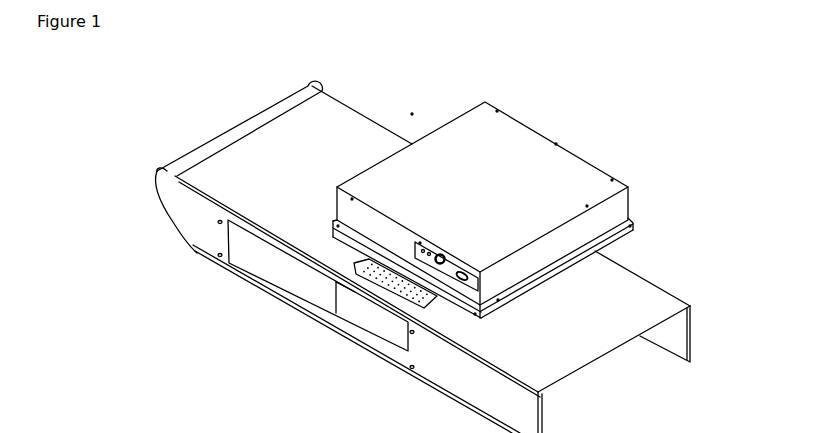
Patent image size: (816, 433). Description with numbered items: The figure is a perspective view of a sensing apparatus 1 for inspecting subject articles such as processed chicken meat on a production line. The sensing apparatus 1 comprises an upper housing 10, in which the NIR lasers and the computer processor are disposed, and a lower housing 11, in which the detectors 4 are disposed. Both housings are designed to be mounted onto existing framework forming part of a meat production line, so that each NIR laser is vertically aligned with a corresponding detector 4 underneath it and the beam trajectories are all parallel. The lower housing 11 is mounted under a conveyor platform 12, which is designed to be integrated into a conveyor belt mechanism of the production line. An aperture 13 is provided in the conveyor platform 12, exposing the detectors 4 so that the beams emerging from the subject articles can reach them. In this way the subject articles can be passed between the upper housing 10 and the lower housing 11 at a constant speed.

The sensing apparatus 1 is at (627, 148).
The detector 4 is at (358, 272).
The upper housing 10 is at (546, 137).
The lower housing 11 is at (343, 280).
The conveyor platform 12 is at (297, 263).
The aperture 13 is at (397, 292).